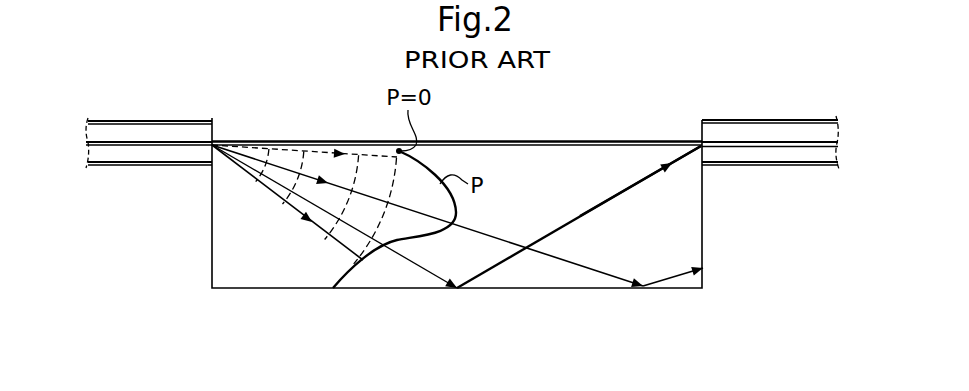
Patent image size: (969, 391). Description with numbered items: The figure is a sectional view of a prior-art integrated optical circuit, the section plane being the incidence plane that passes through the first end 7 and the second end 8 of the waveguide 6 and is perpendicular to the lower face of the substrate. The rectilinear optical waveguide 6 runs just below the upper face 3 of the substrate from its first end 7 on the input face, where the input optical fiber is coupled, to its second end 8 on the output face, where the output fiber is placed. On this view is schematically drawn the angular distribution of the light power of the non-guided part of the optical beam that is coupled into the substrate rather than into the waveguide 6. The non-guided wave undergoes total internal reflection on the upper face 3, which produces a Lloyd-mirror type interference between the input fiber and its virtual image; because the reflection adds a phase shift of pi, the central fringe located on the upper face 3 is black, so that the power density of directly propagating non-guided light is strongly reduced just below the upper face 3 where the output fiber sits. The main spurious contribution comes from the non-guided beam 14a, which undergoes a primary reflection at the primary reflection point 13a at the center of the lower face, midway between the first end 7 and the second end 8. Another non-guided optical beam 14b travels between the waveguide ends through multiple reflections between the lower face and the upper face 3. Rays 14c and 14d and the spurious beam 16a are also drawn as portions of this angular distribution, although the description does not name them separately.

The upper face 3 is at (520, 140).
The optical waveguide 6 is at (603, 143).
The first end 7 is at (213, 141).
The second end 8 is at (701, 143).
The primary reflection point 13a is at (458, 290).
The non-guided beam 14a is at (413, 262).
The non-guided optical beam 14b is at (618, 278).
The light ray 14c is at (345, 250).
The light ray with wavefronts 14d is at (380, 157).
The reflected light ray toward output 16a is at (660, 175).